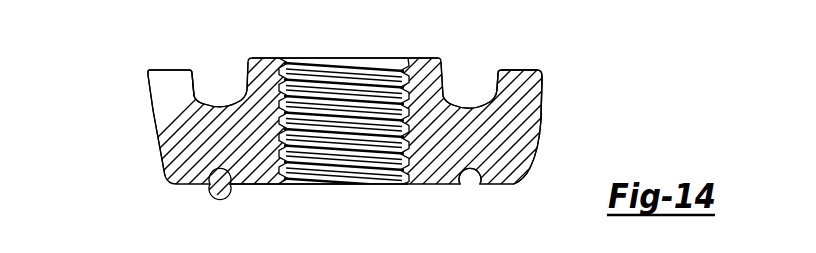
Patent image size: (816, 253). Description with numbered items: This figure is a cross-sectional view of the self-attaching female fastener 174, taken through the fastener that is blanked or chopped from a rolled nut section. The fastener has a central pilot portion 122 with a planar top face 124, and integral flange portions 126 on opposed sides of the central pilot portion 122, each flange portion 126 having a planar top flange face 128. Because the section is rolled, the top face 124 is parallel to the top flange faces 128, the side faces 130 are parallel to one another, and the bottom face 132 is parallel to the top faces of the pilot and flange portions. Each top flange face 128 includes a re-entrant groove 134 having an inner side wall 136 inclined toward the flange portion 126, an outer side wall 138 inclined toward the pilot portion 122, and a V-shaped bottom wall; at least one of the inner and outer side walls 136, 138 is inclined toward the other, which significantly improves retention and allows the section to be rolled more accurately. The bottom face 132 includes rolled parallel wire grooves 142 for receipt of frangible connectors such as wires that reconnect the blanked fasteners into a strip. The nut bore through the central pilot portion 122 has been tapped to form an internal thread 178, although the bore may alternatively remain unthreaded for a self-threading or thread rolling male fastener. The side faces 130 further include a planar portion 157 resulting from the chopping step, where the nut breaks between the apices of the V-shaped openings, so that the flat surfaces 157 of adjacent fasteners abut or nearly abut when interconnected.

The central pilot portion 122 is at (245, 55).
The top face 124 is at (423, 57).
The flange portion 126 is at (549, 71).
The top flange face 128 is at (173, 70).
The side face 130 is at (535, 146).
The bottom face 132 is at (262, 184).
The re-entrant groove 134 is at (222, 103).
The inner side wall 136 is at (455, 70).
The outer side wall 138 is at (490, 76).
The wire groove 142 is at (222, 175).
The planar portion 157 is at (344, 93).
The self-attaching female fastener 174 is at (134, 132).
The internal thread 178 is at (338, 183).